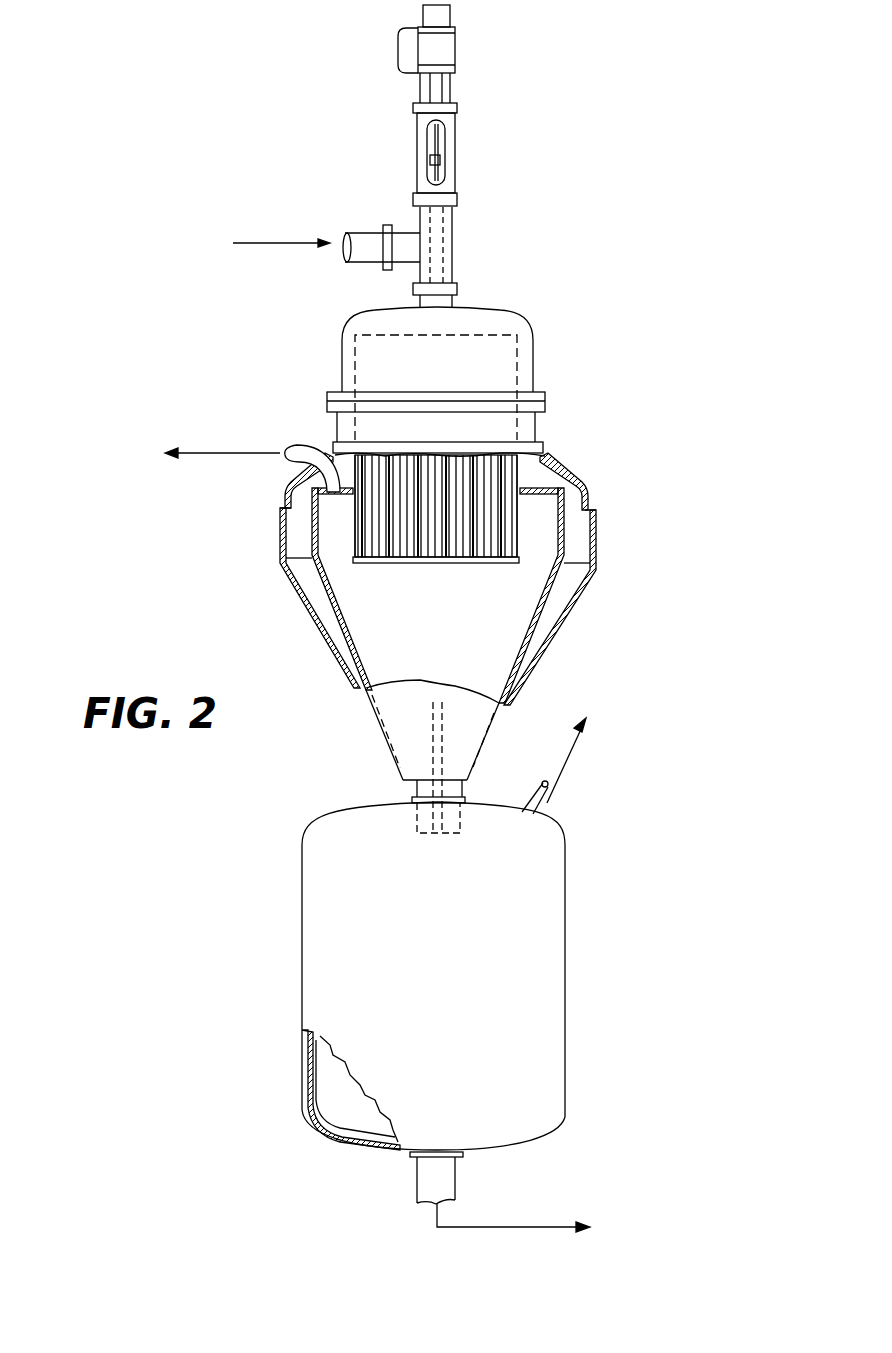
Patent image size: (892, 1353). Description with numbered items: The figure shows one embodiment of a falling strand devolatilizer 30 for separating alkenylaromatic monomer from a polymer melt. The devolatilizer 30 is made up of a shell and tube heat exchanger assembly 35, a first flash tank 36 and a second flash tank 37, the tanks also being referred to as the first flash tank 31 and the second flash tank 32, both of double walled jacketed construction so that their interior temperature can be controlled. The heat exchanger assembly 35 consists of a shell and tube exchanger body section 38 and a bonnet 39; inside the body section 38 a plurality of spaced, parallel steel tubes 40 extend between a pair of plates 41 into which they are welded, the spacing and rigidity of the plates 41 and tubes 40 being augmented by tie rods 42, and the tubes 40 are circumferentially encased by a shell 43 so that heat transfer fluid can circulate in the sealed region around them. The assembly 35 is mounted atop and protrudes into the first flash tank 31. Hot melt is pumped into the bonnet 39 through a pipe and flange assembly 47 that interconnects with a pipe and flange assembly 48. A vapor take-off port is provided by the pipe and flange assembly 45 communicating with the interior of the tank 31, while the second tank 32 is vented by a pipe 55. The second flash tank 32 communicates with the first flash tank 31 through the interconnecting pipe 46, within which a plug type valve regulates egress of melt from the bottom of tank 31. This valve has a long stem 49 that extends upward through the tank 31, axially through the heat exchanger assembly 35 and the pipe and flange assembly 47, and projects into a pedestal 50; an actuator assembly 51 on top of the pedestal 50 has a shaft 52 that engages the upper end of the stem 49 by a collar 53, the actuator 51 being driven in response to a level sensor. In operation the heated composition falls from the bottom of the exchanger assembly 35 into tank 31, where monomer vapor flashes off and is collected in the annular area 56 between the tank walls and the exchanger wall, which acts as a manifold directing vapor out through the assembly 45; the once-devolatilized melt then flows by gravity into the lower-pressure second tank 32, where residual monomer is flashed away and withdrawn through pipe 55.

The falling strand devolatilizer 30 is at (626, 568).
The first flash tank 31 is at (467, 638).
The second flash tank 32 is at (448, 992).
The shell and tube heat exchanger assembly 35 is at (443, 381).
The first flash tank 36 is at (585, 619).
The second flash tank 37 is at (582, 888).
The shell and tube exchanger body section 38 is at (348, 428).
The bonnet 39 is at (520, 318).
The tubes 40 is at (378, 530).
The plates 41 is at (410, 560).
The tie rods 42 is at (437, 467).
The shell 43 is at (520, 473).
The pipe and flange assembly 45 is at (300, 465).
The interconnecting pipe 46 is at (455, 790).
The pipe and flange assembly 47 is at (447, 242).
The pipe and flange assembly 48 is at (457, 290).
The valve stem 49 is at (444, 175).
The pedestal 50 is at (455, 143).
The actuator assembly 51 is at (445, 48).
The shaft 52 is at (440, 128).
The collar 53 is at (442, 162).
The pipe 55 is at (550, 785).
The annular area 56 is at (300, 492).